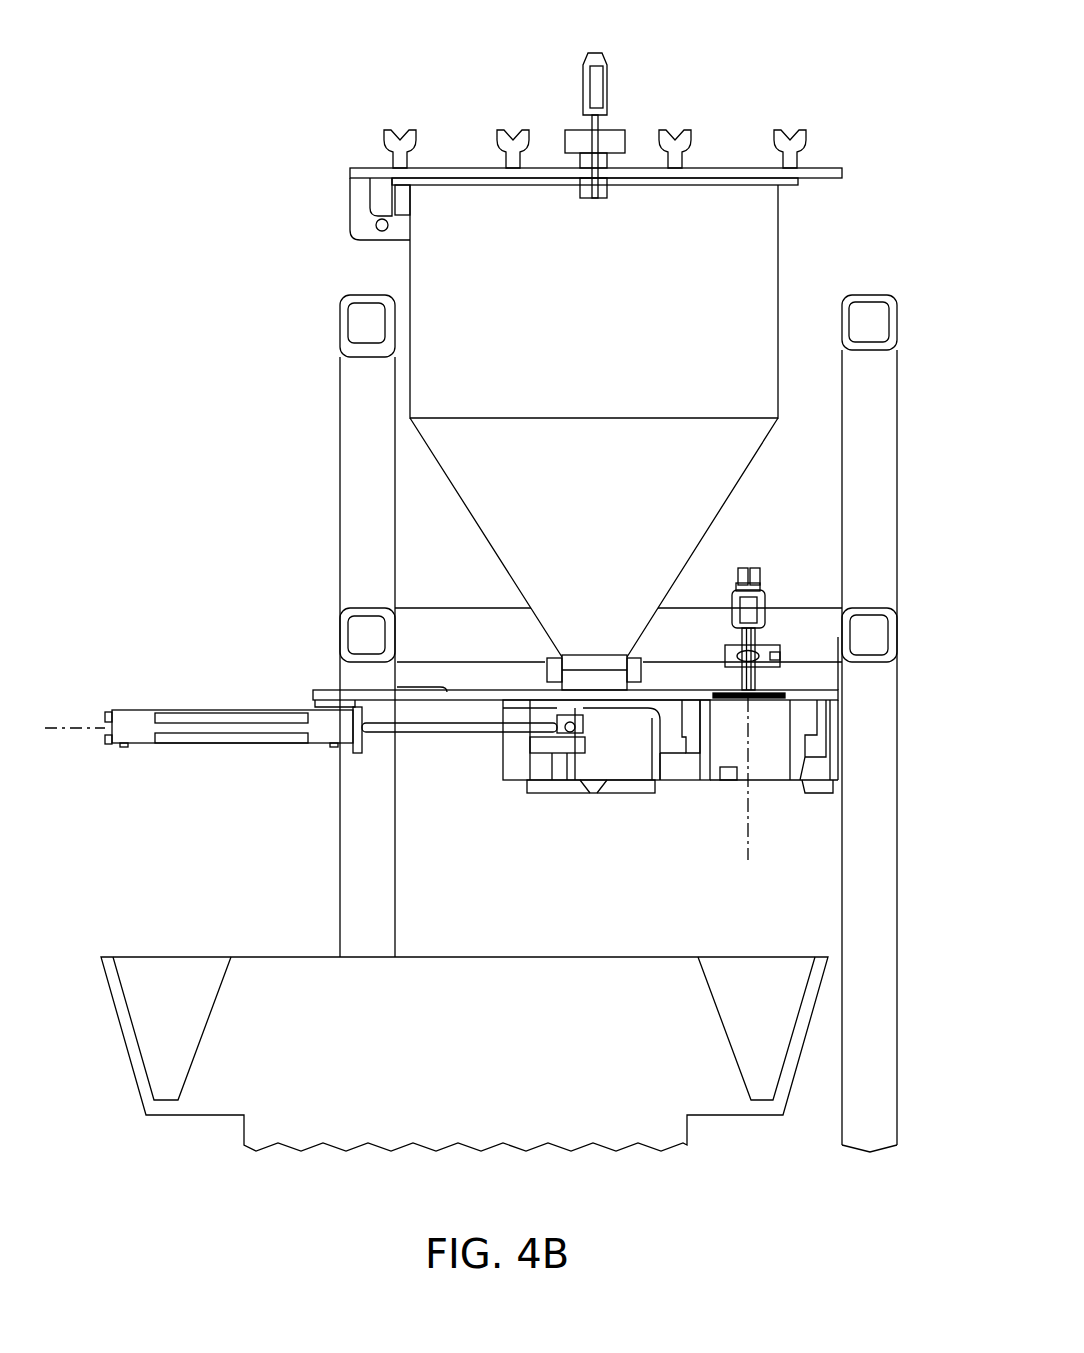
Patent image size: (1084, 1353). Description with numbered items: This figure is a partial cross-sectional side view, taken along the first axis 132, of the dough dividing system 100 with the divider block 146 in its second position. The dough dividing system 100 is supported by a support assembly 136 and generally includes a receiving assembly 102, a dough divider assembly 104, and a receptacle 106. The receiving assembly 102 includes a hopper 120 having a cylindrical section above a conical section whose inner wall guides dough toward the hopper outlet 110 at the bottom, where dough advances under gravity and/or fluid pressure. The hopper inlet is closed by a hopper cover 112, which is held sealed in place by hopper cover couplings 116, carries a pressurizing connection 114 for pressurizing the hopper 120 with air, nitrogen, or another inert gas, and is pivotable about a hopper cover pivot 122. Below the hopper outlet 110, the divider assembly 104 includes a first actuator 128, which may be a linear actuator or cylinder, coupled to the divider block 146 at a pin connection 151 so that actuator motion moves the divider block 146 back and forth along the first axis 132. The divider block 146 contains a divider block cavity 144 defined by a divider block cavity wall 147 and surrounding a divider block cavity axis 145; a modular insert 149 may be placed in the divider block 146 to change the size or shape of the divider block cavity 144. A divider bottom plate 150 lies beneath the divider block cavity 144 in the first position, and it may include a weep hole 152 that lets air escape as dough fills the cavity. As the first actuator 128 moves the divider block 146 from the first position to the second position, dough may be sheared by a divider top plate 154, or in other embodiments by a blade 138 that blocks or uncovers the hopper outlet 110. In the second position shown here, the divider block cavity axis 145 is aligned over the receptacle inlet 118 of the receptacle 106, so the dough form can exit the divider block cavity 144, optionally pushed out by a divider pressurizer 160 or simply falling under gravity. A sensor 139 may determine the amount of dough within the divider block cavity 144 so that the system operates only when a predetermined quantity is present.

The dough dividing system 100 is at (502, 576).
The receiving assembly 102 is at (619, 371).
The dough divider assembly 104 is at (301, 744).
The receptacle 106 is at (110, 1018).
The hopper outlet 110 is at (594, 625).
The hopper cover 112 is at (466, 166).
The pressurizing connection 114 is at (607, 95).
The hopper cover coupling 116 is at (396, 130).
The receptacle inlet 118 is at (464, 997).
The hopper 120 is at (530, 421).
The hopper cover pivot 122 is at (375, 224).
The first actuator 128 is at (138, 712).
The first axis 132 is at (60, 726).
The support assembly 136 is at (888, 474).
The blade 138 is at (605, 705).
The sensor 139 is at (730, 778).
The divider block cavity 144 is at (774, 771).
The divider block cavity axis 145 is at (748, 858).
The divider block 146 is at (680, 745).
The divider block cavity wall 147 is at (710, 712).
The modular insert 149 is at (693, 702).
The divider bottom plate 150 is at (528, 785).
The pin connection 151 is at (570, 722).
The weep hole 152 is at (555, 805).
The divider top plate 154 is at (850, 690).
The divider pressurizer 160 is at (758, 591).